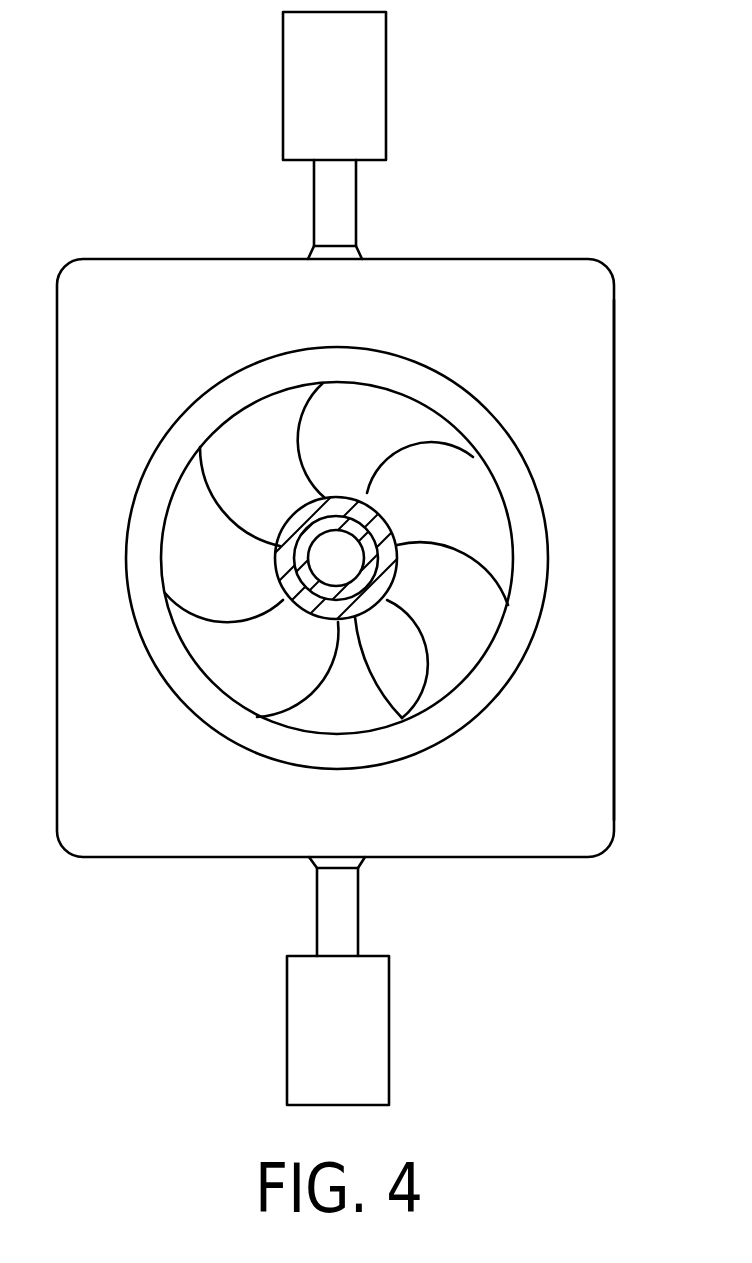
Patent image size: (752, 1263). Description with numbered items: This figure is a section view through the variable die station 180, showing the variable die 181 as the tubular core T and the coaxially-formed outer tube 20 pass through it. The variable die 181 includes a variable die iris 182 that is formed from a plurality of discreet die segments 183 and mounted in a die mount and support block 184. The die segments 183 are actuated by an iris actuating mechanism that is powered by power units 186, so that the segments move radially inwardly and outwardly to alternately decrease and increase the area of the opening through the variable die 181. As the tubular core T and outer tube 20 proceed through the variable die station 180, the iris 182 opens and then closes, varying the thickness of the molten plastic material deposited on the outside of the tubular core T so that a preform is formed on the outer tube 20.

The variable die station 180 is at (574, 156).
The variable die 181 is at (86, 259).
The die mount and support block 184 is at (598, 355).
The power units 186 is at (387, 75).
The outer tube 20 is at (402, 718).
The variable die iris 182 is at (485, 518).
The die segments 183 is at (475, 618).
The tubular core T is at (331, 496).